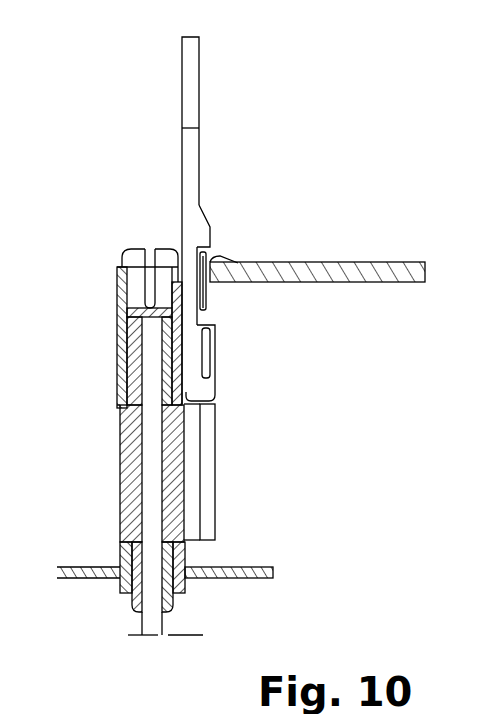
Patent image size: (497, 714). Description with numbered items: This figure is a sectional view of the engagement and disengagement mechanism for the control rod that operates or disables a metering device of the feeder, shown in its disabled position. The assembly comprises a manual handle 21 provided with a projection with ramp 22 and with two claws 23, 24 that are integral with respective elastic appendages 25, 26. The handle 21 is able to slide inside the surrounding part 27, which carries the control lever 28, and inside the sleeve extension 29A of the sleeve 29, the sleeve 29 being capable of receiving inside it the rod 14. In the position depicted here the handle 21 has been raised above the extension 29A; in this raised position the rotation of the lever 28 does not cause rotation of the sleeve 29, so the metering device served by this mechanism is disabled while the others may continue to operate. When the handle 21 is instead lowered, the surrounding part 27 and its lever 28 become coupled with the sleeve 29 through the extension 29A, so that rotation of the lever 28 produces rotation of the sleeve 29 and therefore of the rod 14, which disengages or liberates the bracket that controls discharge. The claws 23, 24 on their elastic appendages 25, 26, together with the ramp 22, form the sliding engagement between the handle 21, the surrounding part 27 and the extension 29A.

The manual handle 21 is at (193, 105).
The projection with ramp 22 is at (210, 230).
The claw 23 is at (232, 265).
The claw 24 is at (215, 333).
The elastic appendage 25 is at (208, 302).
The elastic appendage 26 is at (210, 376).
The surrounding part 27 is at (127, 353).
The control lever 28 is at (362, 270).
The sleeve 29 is at (127, 437).
The sleeve extension 29A is at (200, 512).
The rod 14 is at (162, 623).